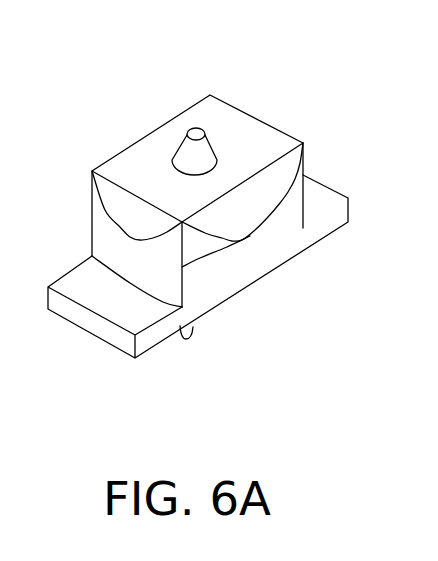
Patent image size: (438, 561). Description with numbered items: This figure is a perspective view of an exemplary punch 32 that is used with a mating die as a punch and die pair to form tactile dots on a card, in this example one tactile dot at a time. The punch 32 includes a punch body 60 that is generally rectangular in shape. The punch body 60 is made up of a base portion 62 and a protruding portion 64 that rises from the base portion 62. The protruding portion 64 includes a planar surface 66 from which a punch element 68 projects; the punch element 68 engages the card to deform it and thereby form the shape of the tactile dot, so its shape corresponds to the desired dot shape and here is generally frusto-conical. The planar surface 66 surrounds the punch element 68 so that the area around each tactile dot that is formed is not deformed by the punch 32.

The punch 32 is at (210, 233).
The punch body 60 is at (285, 230).
The base portion 62 is at (105, 288).
The protruding portion 64 is at (296, 194).
The planar surface 66 is at (148, 168).
The punch element 68 is at (195, 129).